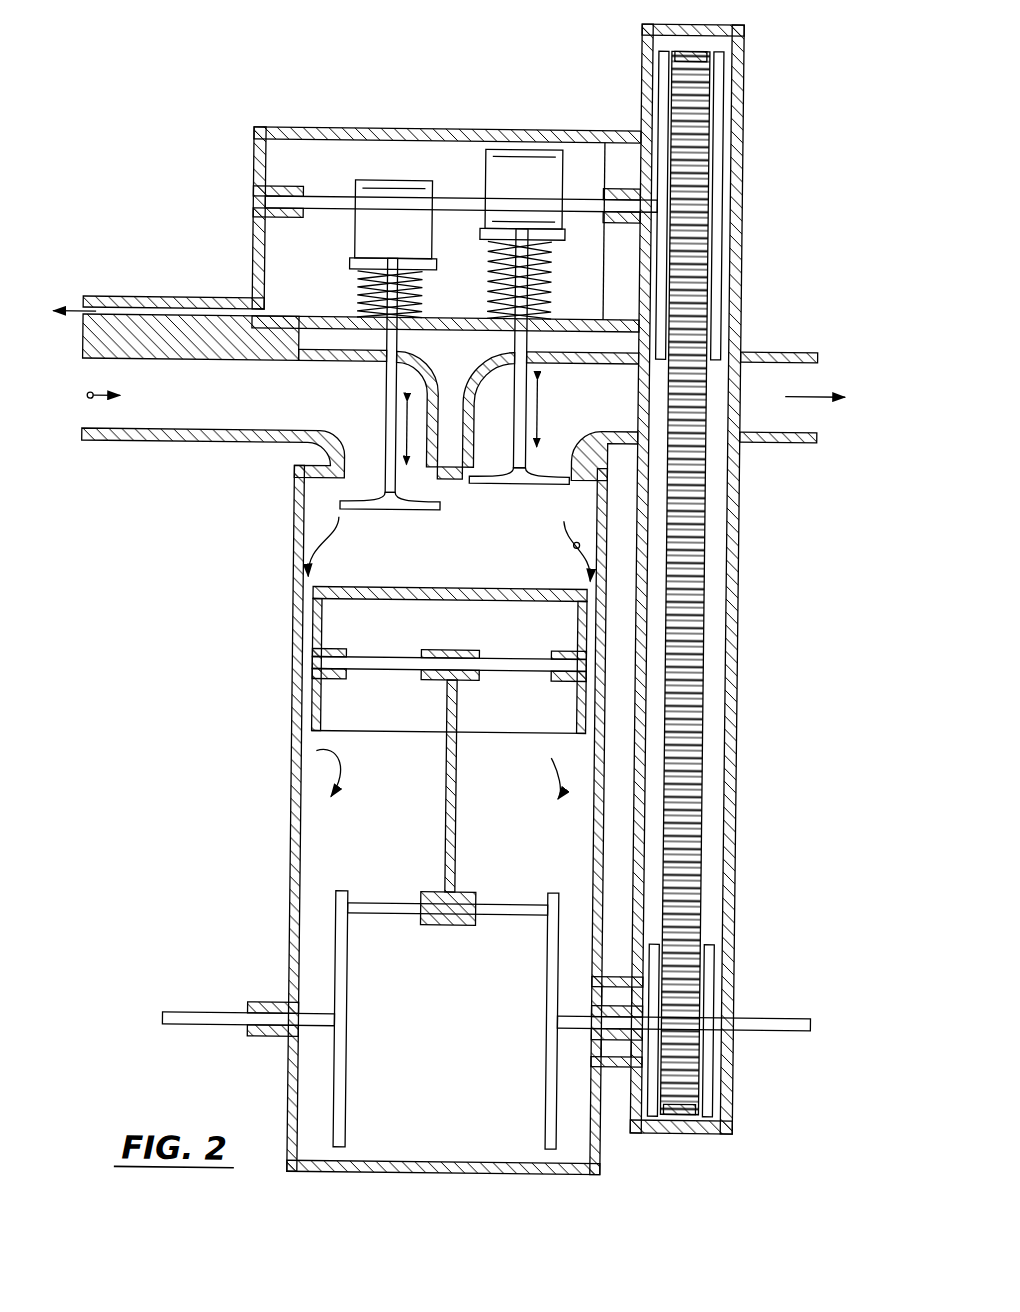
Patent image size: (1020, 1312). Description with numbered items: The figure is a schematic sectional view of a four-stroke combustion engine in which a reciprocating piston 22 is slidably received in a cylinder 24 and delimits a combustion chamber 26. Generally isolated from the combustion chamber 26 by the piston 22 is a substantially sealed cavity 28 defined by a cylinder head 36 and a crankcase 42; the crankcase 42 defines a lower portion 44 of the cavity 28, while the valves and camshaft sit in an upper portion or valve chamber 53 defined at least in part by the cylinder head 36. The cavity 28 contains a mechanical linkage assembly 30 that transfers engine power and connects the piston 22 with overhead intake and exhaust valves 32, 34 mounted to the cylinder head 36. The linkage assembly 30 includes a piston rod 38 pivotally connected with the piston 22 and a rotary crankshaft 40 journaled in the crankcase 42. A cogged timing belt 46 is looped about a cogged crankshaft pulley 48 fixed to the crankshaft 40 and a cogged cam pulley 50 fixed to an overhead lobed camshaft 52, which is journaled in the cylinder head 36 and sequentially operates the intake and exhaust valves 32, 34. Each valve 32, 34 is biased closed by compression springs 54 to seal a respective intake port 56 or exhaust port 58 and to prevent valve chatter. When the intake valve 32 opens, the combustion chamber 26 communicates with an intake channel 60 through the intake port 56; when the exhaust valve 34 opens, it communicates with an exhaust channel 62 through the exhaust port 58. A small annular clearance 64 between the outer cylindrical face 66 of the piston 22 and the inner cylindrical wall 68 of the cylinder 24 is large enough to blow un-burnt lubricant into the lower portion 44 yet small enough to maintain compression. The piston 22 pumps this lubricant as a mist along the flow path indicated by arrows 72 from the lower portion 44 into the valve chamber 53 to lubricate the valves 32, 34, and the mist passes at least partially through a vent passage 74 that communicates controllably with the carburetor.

The piston 22 is at (441, 639).
The cylinder 24 is at (300, 646).
The combustion chamber 26 is at (171, 120).
The sealed cavity 28 is at (292, 268).
The mechanical linkage assembly 30 is at (352, 1100).
The intake valve 32 is at (374, 231).
The exhaust valve 34 is at (505, 194).
The cylinder head 36 is at (350, 129).
The piston rod 38 is at (458, 822).
The crankshaft 40 is at (212, 1014).
The crankcase 42 is at (292, 919).
The lower portion 44 is at (441, 985).
The cogged timing belt 46 is at (686, 676).
The cogged crankshaft pulley 48 is at (705, 959).
The cogged cam pulley 50 is at (718, 173).
The camshaft 52 is at (453, 198).
The valve chamber 53 is at (301, 178).
The compression springs 54 is at (416, 308).
The intake port 56 is at (360, 475).
The exhaust port 58 is at (467, 485).
The intake channel 60 is at (174, 410).
The exhaust channel 62 is at (806, 348).
The annular clearance 64 is at (301, 613).
The outer cylindrical face 66 is at (312, 696).
The inner cylindrical wall 68 is at (314, 618).
The arrows 72 is at (572, 546).
The vent passage 74 is at (106, 300).